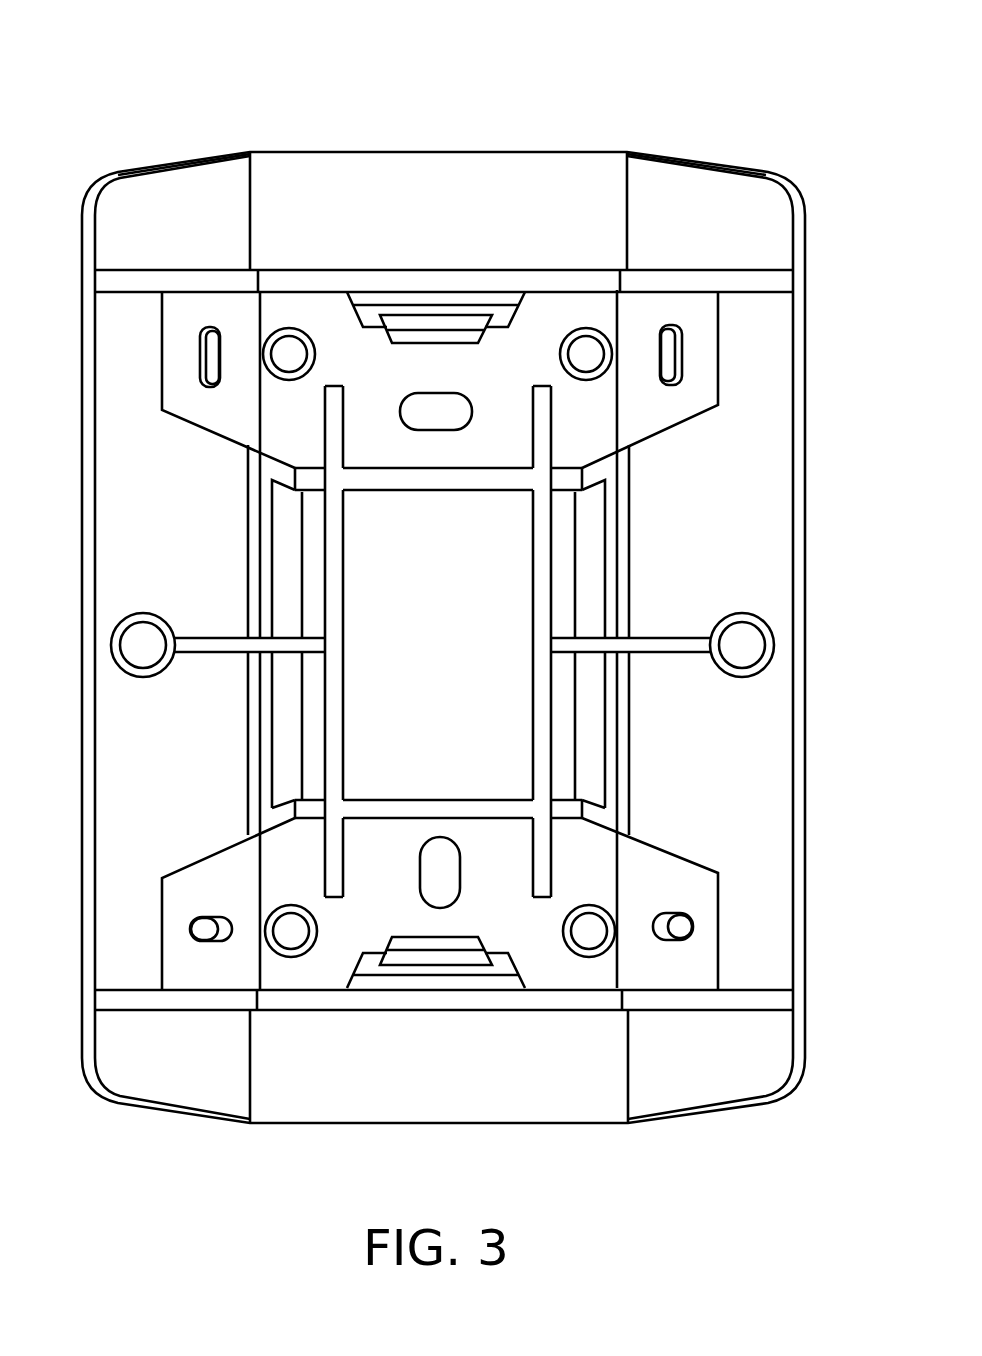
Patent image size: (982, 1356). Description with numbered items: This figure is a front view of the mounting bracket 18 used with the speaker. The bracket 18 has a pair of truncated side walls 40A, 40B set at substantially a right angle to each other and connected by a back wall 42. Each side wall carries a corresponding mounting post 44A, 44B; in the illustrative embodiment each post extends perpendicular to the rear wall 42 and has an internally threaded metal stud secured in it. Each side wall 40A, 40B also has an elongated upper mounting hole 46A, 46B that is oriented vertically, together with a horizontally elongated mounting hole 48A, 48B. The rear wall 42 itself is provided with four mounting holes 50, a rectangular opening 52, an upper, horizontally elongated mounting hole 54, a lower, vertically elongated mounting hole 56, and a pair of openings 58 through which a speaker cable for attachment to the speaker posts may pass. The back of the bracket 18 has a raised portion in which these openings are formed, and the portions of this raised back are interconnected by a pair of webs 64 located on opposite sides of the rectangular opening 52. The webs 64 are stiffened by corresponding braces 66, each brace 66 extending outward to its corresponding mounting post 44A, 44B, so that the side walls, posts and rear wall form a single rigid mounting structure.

The bracket 18 is at (432, 63).
The side wall 40A is at (713, 180).
The side wall 40B is at (165, 180).
The back wall 42 is at (502, 152).
The mounting post 44A is at (740, 677).
The mounting post 44B is at (143, 662).
The upper mounting hole 46A is at (682, 357).
The upper mounting hole 46B is at (200, 355).
The mounting hole 48A is at (697, 927).
The mounting hole 48B is at (190, 930).
The mounting holes 50 is at (289, 328).
The rectangular opening 52 is at (424, 628).
The upper mounting hole 54 is at (440, 393).
The lower mounting hole 56 is at (427, 842).
The openings 58 is at (413, 323).
The webs 64 is at (333, 715).
The braces 66 is at (585, 648).